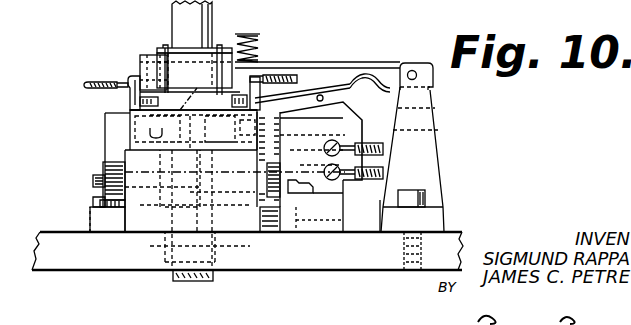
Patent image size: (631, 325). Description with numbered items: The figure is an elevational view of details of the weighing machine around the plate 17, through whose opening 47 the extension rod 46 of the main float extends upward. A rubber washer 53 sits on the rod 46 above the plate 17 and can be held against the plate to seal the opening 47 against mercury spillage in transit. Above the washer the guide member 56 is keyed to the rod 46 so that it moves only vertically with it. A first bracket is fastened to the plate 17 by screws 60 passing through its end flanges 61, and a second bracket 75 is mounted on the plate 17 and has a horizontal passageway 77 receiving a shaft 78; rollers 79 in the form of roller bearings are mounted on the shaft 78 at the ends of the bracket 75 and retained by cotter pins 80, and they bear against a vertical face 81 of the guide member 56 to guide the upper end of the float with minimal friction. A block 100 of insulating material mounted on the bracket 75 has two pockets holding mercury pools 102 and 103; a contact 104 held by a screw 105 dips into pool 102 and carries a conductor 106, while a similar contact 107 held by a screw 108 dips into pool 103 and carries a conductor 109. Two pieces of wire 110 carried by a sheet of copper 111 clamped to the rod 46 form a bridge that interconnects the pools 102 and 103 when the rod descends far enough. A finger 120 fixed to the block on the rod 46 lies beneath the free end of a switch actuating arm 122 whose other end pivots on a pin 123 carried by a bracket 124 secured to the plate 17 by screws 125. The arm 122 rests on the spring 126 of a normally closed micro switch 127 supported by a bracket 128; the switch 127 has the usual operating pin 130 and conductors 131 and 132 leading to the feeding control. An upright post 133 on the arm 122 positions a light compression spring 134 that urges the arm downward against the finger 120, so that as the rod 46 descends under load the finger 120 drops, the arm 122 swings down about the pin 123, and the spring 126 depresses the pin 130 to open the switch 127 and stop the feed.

The plate 17 is at (52, 270).
The extension rod 46 is at (190, 282).
The opening 47 is at (165, 262).
The rubber washer 53 is at (165, 207).
The guide member 56 is at (105, 130).
The screws 60 is at (95, 198).
The flanges 61 is at (90, 222).
The second bracket 75 is at (125, 157).
The passageway 77 is at (235, 210).
The shaft 78 is at (95, 180).
The rollers 79 is at (270, 152).
The cotter pins 80 is at (95, 173).
The vertical face 81 is at (105, 117).
The block of electrical insulating material 100 is at (138, 145).
The mercury pool 102 is at (190, 72).
The mercury pool 103 is at (197, 99).
The contact 104 is at (133, 77).
The screw 105 is at (140, 100).
The conductor 106 is at (85, 85).
The contact 107 is at (262, 66).
The screw 108 is at (246, 92).
The conductor 109 is at (287, 75).
The pieces of wire 110 is at (206, 70).
The sheet copper 111 is at (192, 24).
The finger 120 is at (153, 52).
The switch actuating arm 122 is at (137, 74).
The pin 123 is at (413, 70).
The bracket 124 is at (433, 147).
The screws 125 is at (408, 190).
The spring 126 is at (365, 78).
The micro switch 127 is at (305, 100).
The bracket 128 is at (345, 232).
The operating pin 130 is at (325, 104).
The conductor 131 is at (373, 143).
The conductor 132 is at (373, 182).
The upright post 133 is at (260, 45).
The compression spring 134 is at (243, 34).